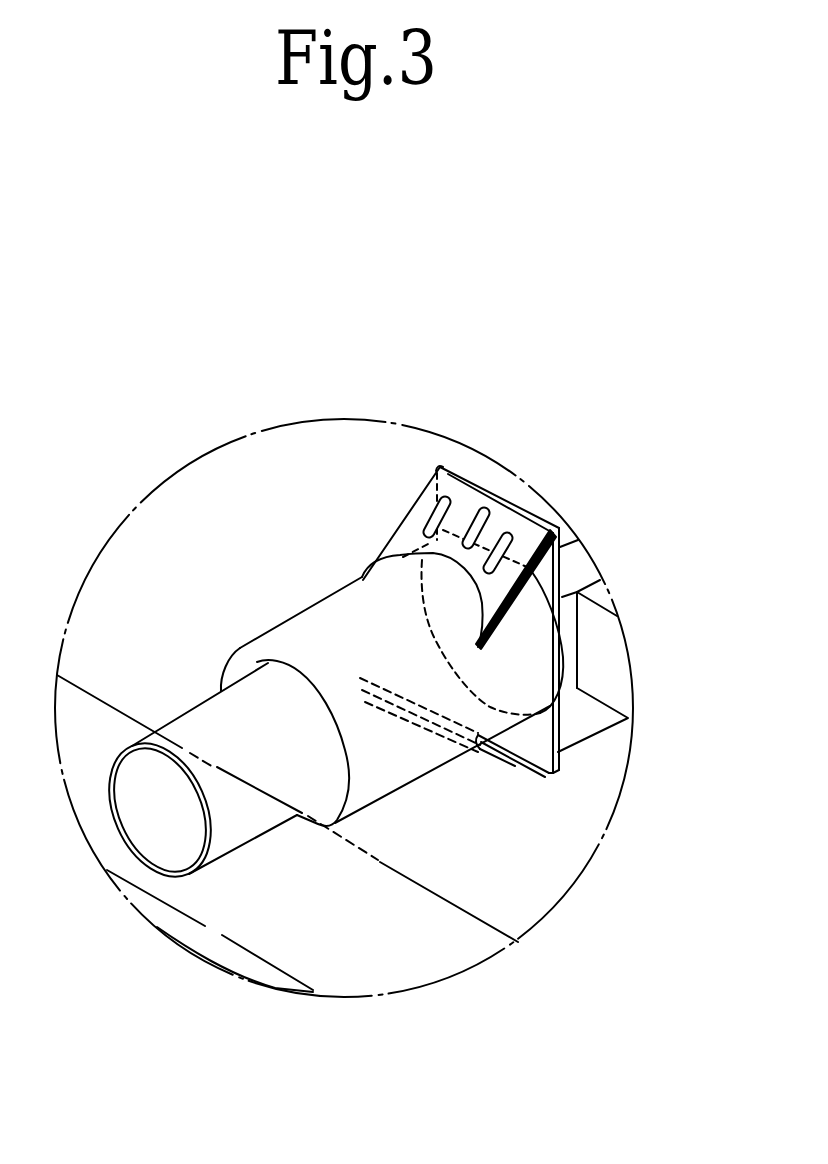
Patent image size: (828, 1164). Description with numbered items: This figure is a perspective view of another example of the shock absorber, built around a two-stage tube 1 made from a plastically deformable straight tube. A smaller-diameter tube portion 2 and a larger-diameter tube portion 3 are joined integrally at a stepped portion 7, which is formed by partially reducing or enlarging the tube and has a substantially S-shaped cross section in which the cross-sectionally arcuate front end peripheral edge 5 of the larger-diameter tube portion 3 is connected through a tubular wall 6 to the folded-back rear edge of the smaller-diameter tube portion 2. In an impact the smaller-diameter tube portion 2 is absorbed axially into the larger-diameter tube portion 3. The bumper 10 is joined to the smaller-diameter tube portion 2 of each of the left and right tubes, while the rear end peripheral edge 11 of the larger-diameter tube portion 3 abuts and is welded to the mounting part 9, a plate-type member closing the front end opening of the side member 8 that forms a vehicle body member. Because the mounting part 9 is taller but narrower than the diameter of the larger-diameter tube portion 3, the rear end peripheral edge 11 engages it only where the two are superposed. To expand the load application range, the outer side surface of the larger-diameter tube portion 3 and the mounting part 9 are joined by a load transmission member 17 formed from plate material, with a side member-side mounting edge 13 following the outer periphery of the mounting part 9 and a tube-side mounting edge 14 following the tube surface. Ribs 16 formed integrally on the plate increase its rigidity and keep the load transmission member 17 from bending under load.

The two-stage tube 1 is at (642, 1050).
The smaller-diameter tube portion 2 is at (242, 830).
The larger-diameter tube portion 3 is at (427, 768).
The front end peripheral edge 5 is at (355, 750).
The tubular wall 6 is at (338, 802).
The stepped portion 7 is at (428, 1007).
The side member 8 is at (538, 503).
The mounting part 9 is at (557, 573).
The bumper 10 is at (125, 708).
The rear end peripheral edge 11 is at (565, 657).
The side member-side mounting edge 13 is at (511, 462).
The tube-side mounting edge 14 is at (437, 545).
The ribs 16 is at (466, 530).
The load transmission member 17 is at (451, 442).